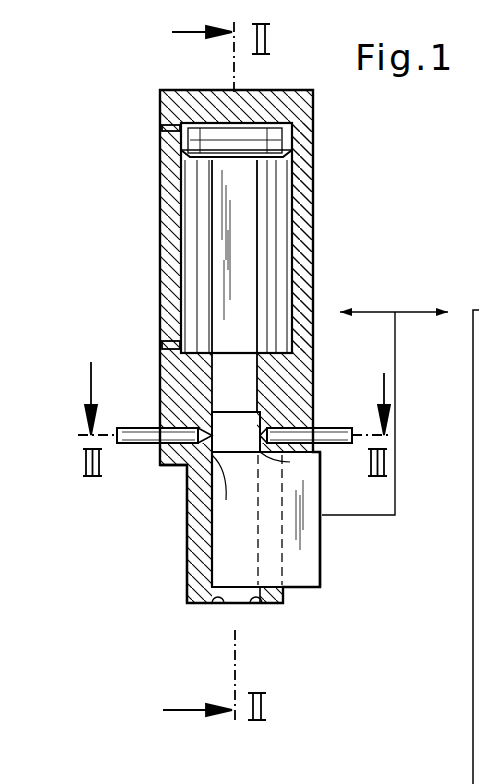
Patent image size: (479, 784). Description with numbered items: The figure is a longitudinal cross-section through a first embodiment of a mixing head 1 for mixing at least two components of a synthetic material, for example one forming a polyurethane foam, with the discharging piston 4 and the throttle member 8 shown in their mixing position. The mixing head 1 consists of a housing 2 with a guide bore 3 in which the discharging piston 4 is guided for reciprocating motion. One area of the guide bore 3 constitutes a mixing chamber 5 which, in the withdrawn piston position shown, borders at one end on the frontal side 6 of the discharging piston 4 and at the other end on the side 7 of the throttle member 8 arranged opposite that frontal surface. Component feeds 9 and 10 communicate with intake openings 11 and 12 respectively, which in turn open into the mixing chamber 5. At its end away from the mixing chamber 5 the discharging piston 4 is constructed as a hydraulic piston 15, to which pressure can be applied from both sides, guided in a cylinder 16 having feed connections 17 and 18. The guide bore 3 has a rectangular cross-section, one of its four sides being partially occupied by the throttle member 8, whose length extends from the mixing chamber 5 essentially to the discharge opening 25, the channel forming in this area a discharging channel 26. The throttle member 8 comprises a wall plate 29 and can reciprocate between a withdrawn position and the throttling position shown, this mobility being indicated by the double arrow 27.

The mixing head 1 is at (315, 229).
The housing 2 is at (303, 167).
The guide bore 3 is at (256, 606).
The discharging piston 4 is at (236, 283).
The mixing chamber 5 is at (232, 442).
The frontal side 6 is at (243, 412).
The side of throttle member 7 is at (212, 495).
The throttle member 8 is at (226, 536).
The component feed 9 is at (138, 432).
The component feed 10 is at (337, 429).
The intake opening 11 is at (168, 466).
The intake opening 12 is at (262, 452).
The hydraulic piston 15 is at (267, 139).
The cylinder 16 is at (270, 197).
The feed connection 17 is at (162, 128).
The feed connection 18 is at (162, 346).
The discharge opening 25 is at (242, 606).
The discharging channel 26 is at (220, 606).
The double arrow 27 is at (383, 311).
The wall plate 29 is at (308, 563).